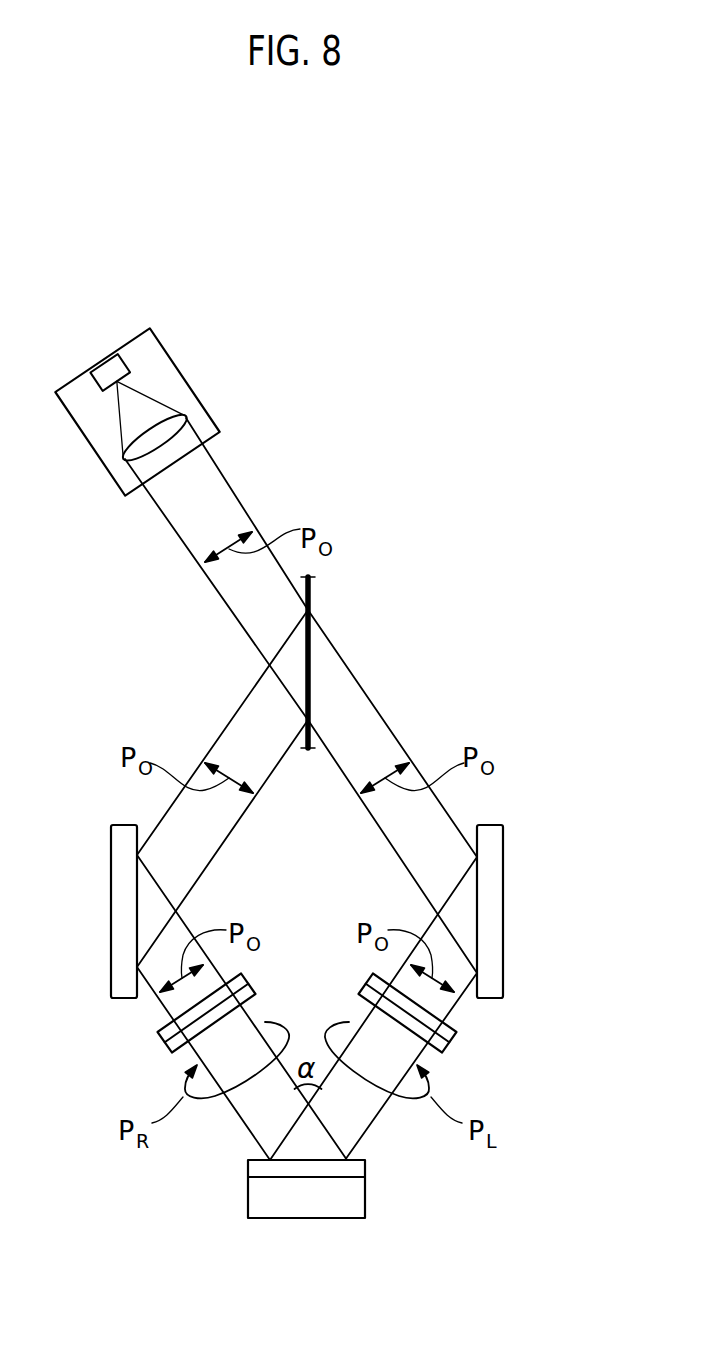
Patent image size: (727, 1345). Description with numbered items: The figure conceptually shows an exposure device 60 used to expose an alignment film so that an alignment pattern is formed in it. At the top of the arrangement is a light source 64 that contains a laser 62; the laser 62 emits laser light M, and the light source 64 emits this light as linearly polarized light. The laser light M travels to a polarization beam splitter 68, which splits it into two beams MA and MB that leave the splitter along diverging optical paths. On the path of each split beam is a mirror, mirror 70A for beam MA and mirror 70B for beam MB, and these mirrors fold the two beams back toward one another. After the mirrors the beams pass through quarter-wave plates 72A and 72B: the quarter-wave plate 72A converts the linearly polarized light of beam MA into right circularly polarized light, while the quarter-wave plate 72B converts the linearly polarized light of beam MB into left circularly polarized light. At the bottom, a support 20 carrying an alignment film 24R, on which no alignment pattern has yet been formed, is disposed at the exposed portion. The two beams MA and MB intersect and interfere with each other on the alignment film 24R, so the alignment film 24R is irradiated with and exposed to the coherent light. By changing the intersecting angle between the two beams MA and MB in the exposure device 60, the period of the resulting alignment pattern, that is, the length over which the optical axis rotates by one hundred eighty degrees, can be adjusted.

The support 20 is at (365, 1205).
The alignment film 24R is at (365, 1170).
The exposure device 60 is at (510, 483).
The laser 62 is at (103, 370).
The light source 64 is at (187, 379).
The polarization beam splitter 68 is at (312, 592).
The mirror 70A is at (110, 843).
The mirror 70B is at (504, 843).
The λ/4 plate 72A is at (157, 1037).
The λ/4 plate 72B is at (453, 1038).
The laser light M is at (238, 500).
The beam MA is at (230, 722).
The beam MB is at (387, 720).